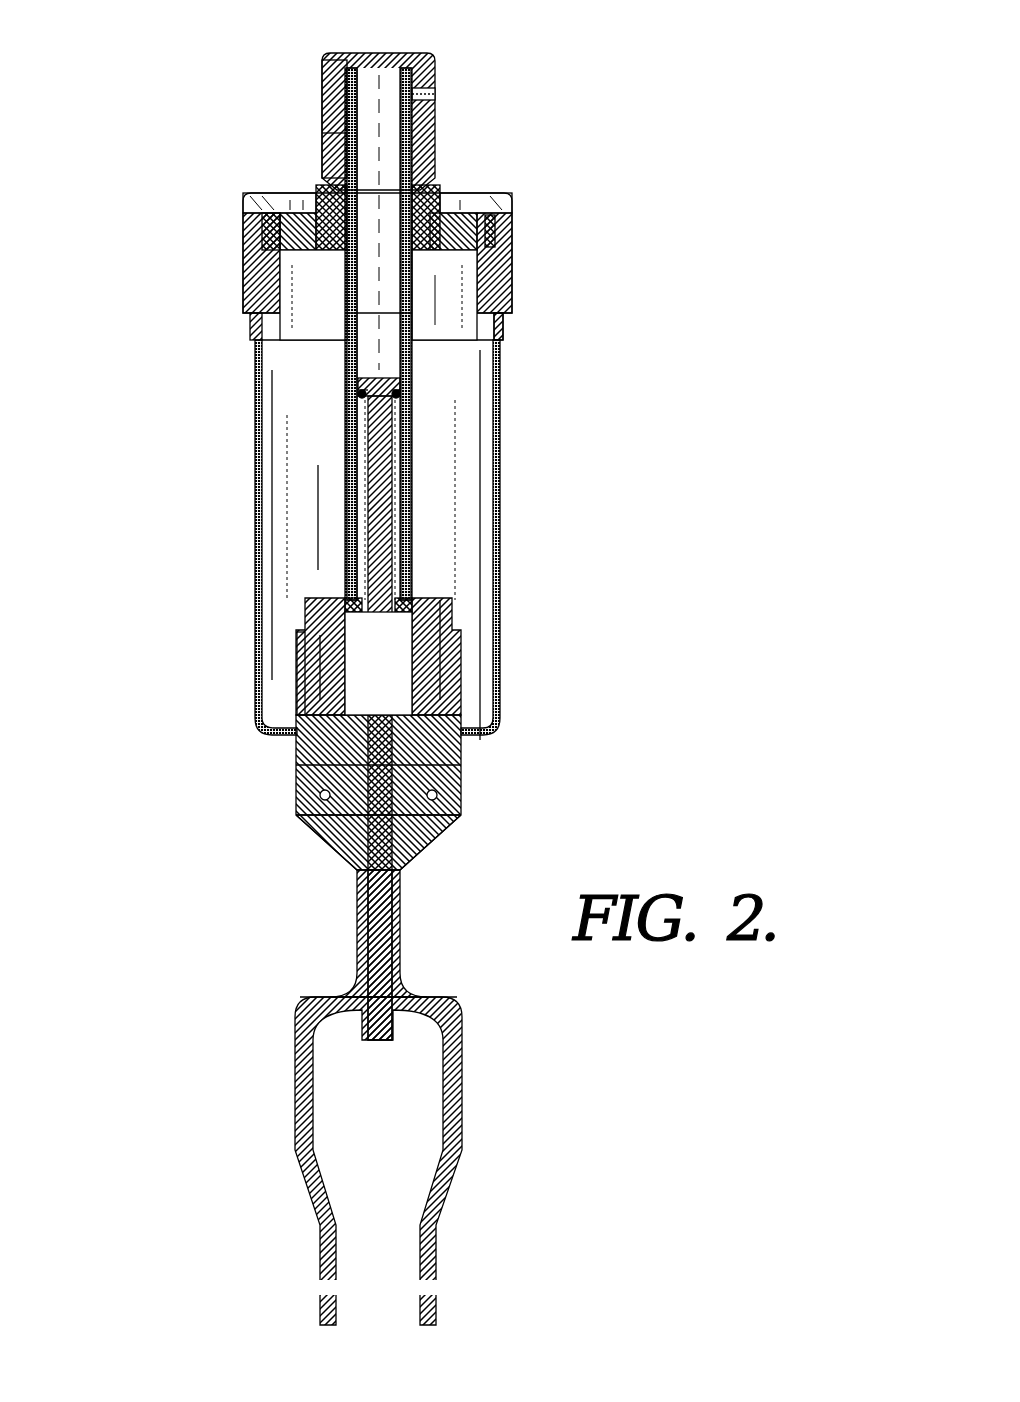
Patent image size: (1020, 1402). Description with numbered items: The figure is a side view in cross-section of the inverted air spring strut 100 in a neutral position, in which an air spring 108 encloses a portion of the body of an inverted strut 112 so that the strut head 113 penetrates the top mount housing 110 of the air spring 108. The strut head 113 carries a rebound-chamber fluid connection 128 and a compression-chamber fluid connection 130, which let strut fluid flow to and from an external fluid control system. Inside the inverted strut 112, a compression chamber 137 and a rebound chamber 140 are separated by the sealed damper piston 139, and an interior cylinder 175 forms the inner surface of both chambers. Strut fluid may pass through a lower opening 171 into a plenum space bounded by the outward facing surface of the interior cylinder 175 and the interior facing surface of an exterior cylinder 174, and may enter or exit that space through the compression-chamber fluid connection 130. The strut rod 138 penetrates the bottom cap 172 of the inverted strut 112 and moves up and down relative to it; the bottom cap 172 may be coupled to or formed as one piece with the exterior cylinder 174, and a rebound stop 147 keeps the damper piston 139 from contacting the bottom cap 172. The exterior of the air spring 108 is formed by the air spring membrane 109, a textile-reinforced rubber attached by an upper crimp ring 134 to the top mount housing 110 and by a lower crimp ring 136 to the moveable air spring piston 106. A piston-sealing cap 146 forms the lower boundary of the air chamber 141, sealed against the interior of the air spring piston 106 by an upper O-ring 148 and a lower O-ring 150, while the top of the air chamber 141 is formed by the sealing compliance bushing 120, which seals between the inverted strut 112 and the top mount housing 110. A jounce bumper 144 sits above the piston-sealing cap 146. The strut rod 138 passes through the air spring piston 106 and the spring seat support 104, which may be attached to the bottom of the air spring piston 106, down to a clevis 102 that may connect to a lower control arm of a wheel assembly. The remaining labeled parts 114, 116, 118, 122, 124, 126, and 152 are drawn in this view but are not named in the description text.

The inverted air spring strut 100 is at (143, 109).
The clevis 102 is at (465, 1080).
The spring seat support 104 is at (400, 915).
The air spring piston 106 is at (462, 770).
The air spring 108 is at (502, 418).
The air spring membrane 109 is at (500, 398).
The top mount housing 110 is at (512, 247).
The inverted strut 112 is at (400, 42).
The strut head 113 is at (322, 80).
The housing wall 114 is at (260, 290).
The thread 116 is at (262, 215).
The seal 118 is at (320, 198).
The sealing compliance bushing 120 is at (303, 252).
The washer 122 is at (262, 228).
The gasket 124 is at (272, 248).
The thread 126 is at (495, 215).
The rebound-chamber fluid connection 128 is at (435, 97).
The compression-chamber fluid connection 130 is at (330, 137).
The upper crimp ring 134 is at (503, 332).
The lower crimp ring 136 is at (461, 612).
The compression chamber 137 is at (367, 378).
The strut rod 138 is at (345, 477).
The damper piston 139 is at (420, 390).
The rebound chamber 140 is at (358, 432).
The air chamber 141 is at (302, 545).
The jounce bumper 144 is at (297, 682).
The piston-sealing cap 146 is at (318, 828).
The rebound stop 147 is at (357, 398).
The upper O-ring 148 is at (460, 795).
The lower O-ring 150 is at (449, 820).
The seal 152 is at (445, 200).
The lower opening 171 is at (415, 600).
The bottom cap 172 is at (456, 660).
The exterior cylinder 174 is at (412, 497).
The interior cylinder 175 is at (412, 455).